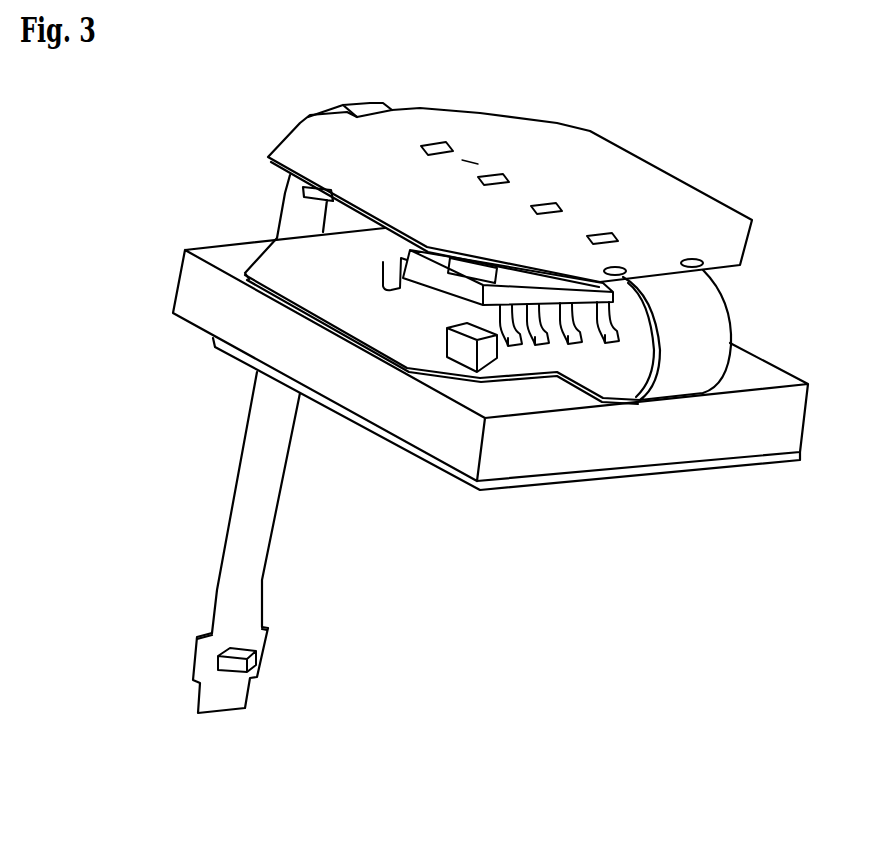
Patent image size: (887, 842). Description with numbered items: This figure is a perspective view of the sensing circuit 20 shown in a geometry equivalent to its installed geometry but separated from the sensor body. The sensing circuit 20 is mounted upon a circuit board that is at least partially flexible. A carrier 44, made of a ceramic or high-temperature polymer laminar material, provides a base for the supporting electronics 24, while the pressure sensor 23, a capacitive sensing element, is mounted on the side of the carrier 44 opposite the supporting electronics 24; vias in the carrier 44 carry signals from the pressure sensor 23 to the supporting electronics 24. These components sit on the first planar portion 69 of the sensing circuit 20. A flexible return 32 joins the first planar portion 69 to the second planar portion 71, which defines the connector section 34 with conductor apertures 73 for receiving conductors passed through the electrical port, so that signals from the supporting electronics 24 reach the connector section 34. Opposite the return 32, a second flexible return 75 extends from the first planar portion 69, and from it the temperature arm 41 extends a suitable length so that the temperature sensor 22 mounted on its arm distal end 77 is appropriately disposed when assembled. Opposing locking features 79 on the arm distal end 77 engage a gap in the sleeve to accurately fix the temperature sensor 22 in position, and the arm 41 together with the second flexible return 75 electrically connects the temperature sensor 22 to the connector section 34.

The sensing circuit 20 is at (690, 712).
The temperature sensor 22 is at (242, 662).
The pressure sensor 23 is at (490, 490).
The supporting electronics 24 is at (430, 267).
The return 32 is at (710, 315).
The connector section 34 is at (470, 163).
The temperature arm 41 is at (263, 443).
The carrier 44 is at (693, 437).
The first planar portion 69 is at (392, 333).
The second planar portion 71 is at (673, 200).
The conductor apertures 73 is at (592, 163).
The second flexible return 75 is at (312, 112).
The arm distal end 77 is at (220, 705).
The locking features 79 is at (265, 650).